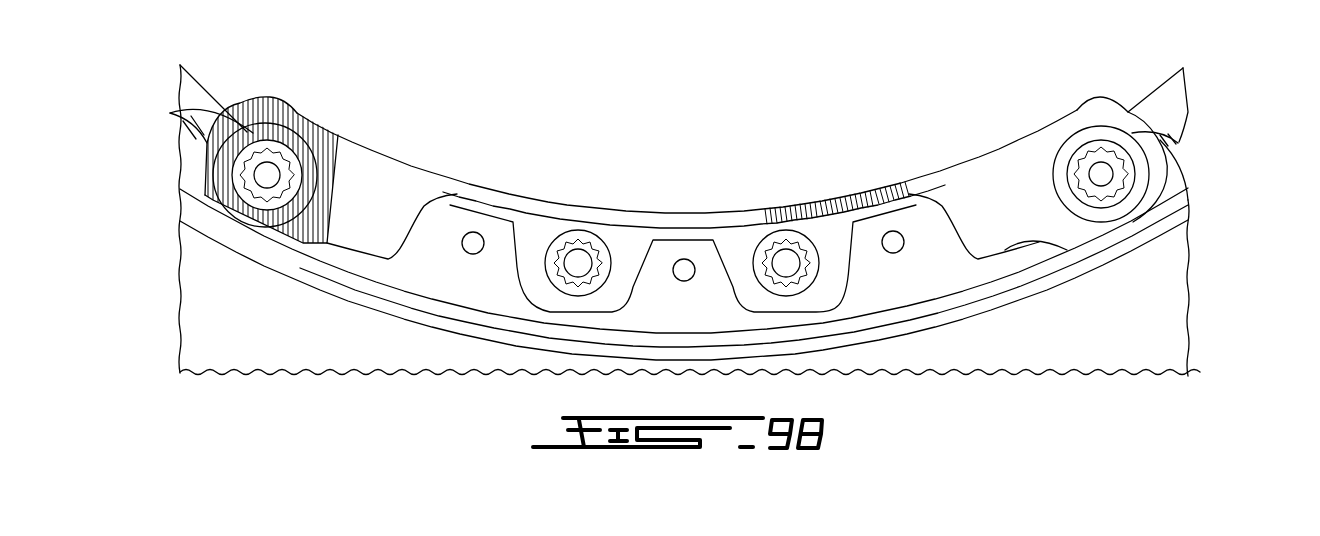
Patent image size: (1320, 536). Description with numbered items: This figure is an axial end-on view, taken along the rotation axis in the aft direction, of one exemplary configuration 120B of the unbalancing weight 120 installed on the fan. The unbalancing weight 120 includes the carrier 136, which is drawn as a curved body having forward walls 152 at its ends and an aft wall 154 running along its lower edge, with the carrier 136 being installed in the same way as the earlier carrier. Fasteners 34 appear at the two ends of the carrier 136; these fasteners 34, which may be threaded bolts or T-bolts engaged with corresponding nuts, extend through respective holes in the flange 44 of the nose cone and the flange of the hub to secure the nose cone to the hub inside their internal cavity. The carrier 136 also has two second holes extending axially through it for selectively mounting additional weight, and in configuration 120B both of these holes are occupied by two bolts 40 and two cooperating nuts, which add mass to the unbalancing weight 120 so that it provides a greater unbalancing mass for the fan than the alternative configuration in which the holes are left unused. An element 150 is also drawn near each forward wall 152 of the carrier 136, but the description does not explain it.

The unbalancing weight 120 is at (927, 174).
The configuration of unbalancing weight 120B is at (837, 203).
The carrier 136 is at (390, 200).
The forward walls 152 is at (323, 137).
The insert 150 is at (250, 135).
The fasteners 34 is at (267, 175).
The bolts 40 is at (576, 245).
The flange 44 is at (447, 270).
The aft wall 154 is at (537, 273).